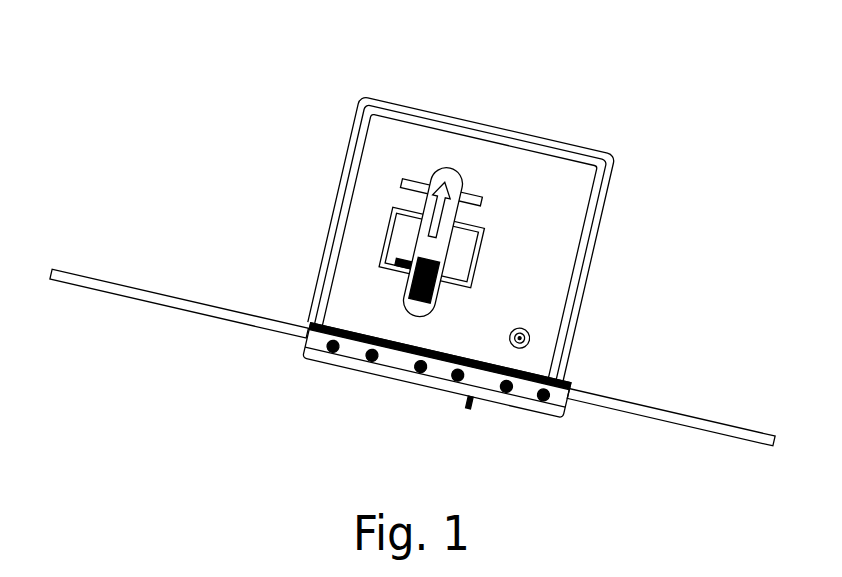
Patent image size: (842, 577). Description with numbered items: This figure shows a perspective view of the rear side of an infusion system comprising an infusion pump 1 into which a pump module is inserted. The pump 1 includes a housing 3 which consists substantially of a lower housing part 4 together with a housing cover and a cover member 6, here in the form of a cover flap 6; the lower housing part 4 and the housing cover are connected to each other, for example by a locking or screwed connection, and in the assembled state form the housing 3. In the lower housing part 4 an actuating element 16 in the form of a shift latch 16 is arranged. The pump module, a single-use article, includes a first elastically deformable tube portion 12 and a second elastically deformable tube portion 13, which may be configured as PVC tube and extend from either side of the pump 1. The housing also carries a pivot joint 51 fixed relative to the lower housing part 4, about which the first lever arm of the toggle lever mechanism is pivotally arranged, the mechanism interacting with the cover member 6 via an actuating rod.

The infusion pump 1 is at (630, 94).
The housing 3 is at (347, 91).
The lower housing part 4 is at (572, 187).
The cover member 6 is at (386, 372).
The first elastically deformable tube portion 12 is at (155, 300).
The second elastically deformable tube portion 13 is at (681, 438).
The actuating element 16 is at (433, 248).
The pivot joint 51 is at (530, 335).